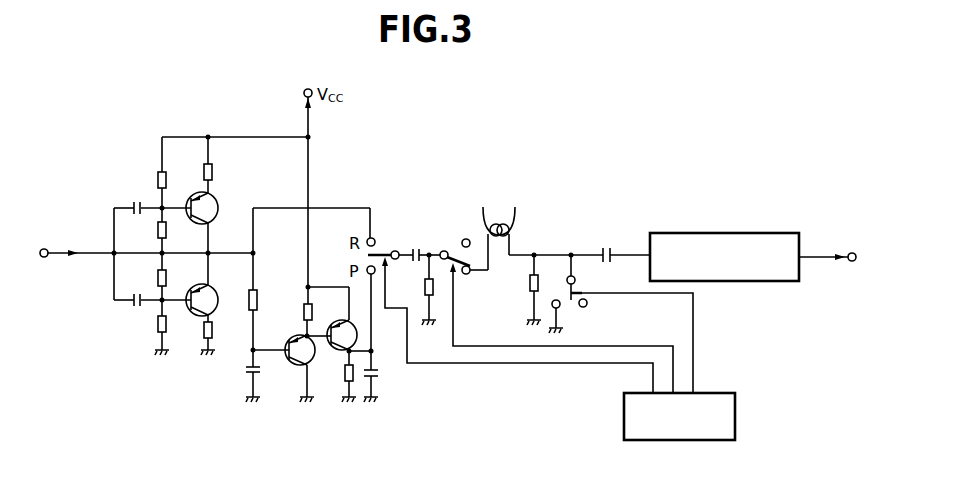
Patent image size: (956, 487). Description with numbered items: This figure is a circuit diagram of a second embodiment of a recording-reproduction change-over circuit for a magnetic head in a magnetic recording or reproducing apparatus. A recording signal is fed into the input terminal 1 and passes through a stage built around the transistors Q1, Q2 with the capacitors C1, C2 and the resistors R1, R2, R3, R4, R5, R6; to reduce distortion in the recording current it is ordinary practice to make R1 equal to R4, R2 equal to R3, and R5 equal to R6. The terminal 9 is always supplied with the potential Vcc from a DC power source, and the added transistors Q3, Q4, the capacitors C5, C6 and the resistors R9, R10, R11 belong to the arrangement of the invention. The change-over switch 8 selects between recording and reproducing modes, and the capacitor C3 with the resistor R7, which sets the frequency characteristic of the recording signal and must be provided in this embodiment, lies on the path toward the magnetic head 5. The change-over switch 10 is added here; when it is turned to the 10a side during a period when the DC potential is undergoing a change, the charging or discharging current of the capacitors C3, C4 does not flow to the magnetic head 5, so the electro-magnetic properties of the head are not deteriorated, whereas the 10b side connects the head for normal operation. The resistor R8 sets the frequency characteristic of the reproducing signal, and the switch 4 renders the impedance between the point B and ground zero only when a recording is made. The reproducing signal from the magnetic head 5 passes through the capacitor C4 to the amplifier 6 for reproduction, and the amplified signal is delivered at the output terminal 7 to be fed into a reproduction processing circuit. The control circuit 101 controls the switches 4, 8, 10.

The input terminal 1 is at (44, 249).
The switch 4 is at (580, 293).
The magnetic head 5 is at (512, 224).
The amplifier for reproduction 6 is at (720, 233).
The output terminal 7 is at (852, 253).
The change-over switch 8 is at (385, 251).
The terminal 9 is at (304, 92).
The change-over switch 10 is at (445, 251).
The contact side of change-over switch 10a is at (466, 237).
The contact side of change-over switch 10b is at (465, 274).
The control circuit 101 is at (715, 393).
The point B is at (554, 250).
The resistor R1 is at (159, 171).
The resistor R2 is at (158, 232).
The resistor R3 is at (158, 276).
The resistor R4 is at (158, 328).
The resistor R5 is at (212, 171).
The resistor R6 is at (213, 332).
The resistor R7 is at (425, 288).
The resistor R8 is at (530, 286).
The resistor R9 is at (257, 301).
The resistor R10 is at (313, 314).
The resistor R11 is at (344, 375).
The capacitor C1 is at (137, 201).
The capacitor C2 is at (137, 307).
The capacitor C3 is at (415, 247).
The capacitor C4 is at (605, 246).
The capacitor C5 is at (252, 371).
The capacitor C6 is at (377, 375).
The transistor Q1 is at (215, 204).
The transistor Q2 is at (215, 296).
The transistor Q3 is at (292, 366).
The transistor Q4 is at (357, 335).